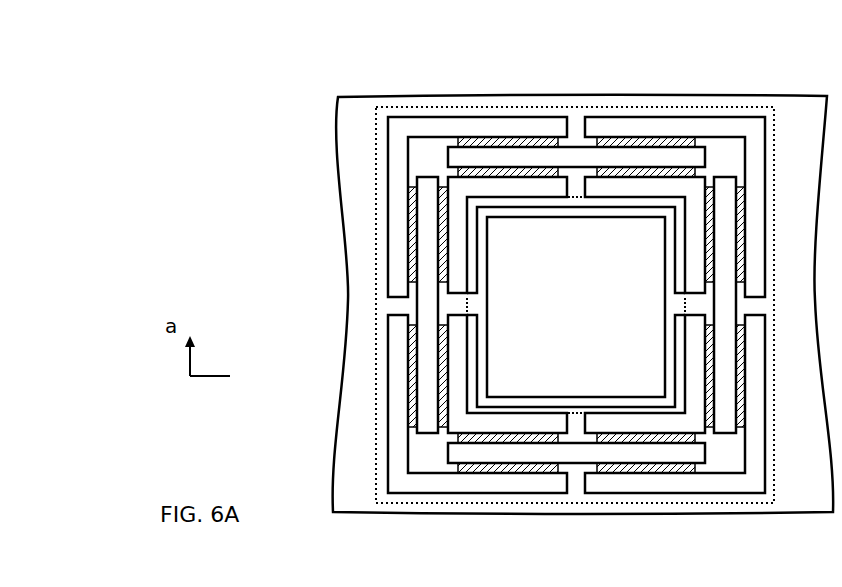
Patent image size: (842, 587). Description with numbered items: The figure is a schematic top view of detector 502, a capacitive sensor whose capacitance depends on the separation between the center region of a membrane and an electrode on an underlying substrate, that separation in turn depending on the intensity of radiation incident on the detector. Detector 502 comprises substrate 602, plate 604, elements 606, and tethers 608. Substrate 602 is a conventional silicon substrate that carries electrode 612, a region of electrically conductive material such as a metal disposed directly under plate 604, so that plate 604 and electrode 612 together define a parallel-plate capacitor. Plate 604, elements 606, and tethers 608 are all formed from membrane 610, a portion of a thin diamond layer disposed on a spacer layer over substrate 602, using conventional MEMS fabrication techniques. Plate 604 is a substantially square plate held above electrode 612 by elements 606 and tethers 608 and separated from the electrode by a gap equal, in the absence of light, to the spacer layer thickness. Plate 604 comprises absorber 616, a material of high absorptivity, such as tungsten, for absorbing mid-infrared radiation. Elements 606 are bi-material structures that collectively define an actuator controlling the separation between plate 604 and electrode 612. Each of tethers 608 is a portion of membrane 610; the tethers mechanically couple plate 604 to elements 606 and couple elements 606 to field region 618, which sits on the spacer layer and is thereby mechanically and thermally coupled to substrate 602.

The detector 502 is at (266, 117).
The substrate 602 is at (635, 127).
The plate 604 is at (672, 365).
The elements 606 is at (441, 237).
The tethers 608 is at (458, 303).
The membrane 610 is at (372, 127).
The electrode 612 is at (680, 200).
The absorber 616 is at (633, 275).
The field region 618 is at (821, 169).